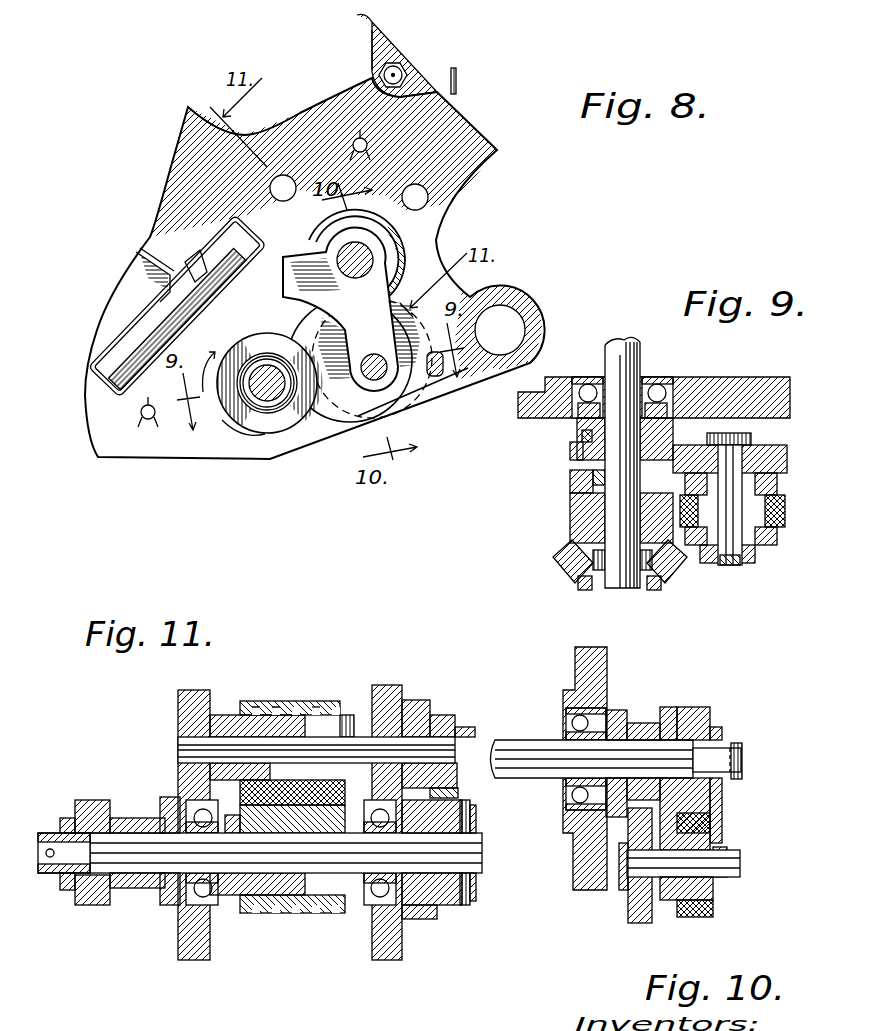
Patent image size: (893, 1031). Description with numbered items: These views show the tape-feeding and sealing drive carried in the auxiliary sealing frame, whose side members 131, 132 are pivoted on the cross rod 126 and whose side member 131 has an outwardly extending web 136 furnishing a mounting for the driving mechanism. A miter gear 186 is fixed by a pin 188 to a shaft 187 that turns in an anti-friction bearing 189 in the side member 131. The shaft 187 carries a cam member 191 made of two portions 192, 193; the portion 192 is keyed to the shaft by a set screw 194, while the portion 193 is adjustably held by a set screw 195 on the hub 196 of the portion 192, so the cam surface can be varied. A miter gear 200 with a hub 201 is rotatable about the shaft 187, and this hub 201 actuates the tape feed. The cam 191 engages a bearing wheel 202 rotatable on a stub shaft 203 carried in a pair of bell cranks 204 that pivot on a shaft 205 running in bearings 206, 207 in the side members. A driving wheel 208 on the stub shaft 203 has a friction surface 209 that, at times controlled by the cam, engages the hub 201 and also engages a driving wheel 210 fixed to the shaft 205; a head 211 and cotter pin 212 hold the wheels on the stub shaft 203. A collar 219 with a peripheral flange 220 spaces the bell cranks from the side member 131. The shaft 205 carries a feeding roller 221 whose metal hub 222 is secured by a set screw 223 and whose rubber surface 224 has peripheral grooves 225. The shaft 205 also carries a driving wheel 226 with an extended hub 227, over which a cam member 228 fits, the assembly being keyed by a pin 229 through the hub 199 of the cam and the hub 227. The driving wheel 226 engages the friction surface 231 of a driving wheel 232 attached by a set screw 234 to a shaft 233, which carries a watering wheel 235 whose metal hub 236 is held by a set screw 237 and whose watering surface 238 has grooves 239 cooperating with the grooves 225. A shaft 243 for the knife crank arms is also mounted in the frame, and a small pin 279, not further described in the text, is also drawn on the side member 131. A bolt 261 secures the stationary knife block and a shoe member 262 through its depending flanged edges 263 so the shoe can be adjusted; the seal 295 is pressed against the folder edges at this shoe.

In FIG. 8, the side member 131 is at (91, 456).
In FIG. 9, the side member 131 is at (718, 392).
In FIG. 11, the side member 131 is at (190, 962).
In FIG. 10, the side member 131 is at (582, 680).
In FIG. 11, the side member 132 is at (390, 962).
In FIG. 8, the cross rod 126 is at (532, 306).
In FIG. 8, the web 136 is at (150, 332).
In FIG. 9, the miter gear 186 is at (598, 590).
In FIG. 8, the shaft 187 is at (268, 398).
In FIG. 9, the shaft 187 is at (622, 588).
In FIG. 9, the pin 188 is at (650, 582).
In FIG. 9, the bearing 189 is at (660, 385).
In FIG. 8, the cam member 191 is at (292, 336).
In FIG. 9, the cam member 191 is at (553, 474).
In FIG. 8, the cam portion 192 is at (240, 354).
In FIG. 9, the cam portion 192 is at (592, 476).
In FIG. 8, the cam portion 193 is at (236, 428).
In FIG. 9, the cam portion 193 is at (570, 446).
In FIG. 9, the set screw 194 is at (580, 488).
In FIG. 9, the set screw 195 is at (580, 436).
In FIG. 9, the hub 196 is at (673, 432).
In FIG. 11, the hub 199 is at (476, 818).
In FIG. 9, the miter gear 200 is at (560, 566).
In FIG. 9, the hub 201 is at (575, 522).
In FIG. 8, the bearing wheel 202 is at (420, 395).
In FIG. 9, the bearing wheel 202 is at (765, 456).
In FIG. 10, the bearing wheel 202 is at (640, 925).
In FIG. 8, the stub shaft 203 is at (440, 374).
In FIG. 9, the stub shaft 203 is at (742, 556).
In FIG. 10, the stub shaft 203 is at (742, 864).
In FIG. 8, the bell crank 204 is at (309, 242).
In FIG. 9, the bell crank 204 is at (777, 486).
In FIG. 11, the bell crank 204 is at (70, 818).
In FIG. 10, the bell crank 204 is at (718, 722).
In FIG. 8, the shaft 205 is at (285, 264).
In FIG. 11, the shaft 205 is at (470, 853).
In FIG. 10, the shaft 205 is at (545, 755).
In FIG. 11, the bearing 206 is at (210, 932).
In FIG. 10, the bearing 206 is at (572, 718).
In FIG. 11, the bearing 207 is at (412, 920).
In FIG. 9, the driving wheel 208 is at (702, 562).
In FIG. 10, the driving wheel 208 is at (716, 893).
In FIG. 9, the friction surface 209 is at (782, 513).
In FIG. 10, the friction surface 209 is at (715, 912).
In FIG. 11, the driving wheel 210 is at (85, 906).
In FIG. 10, the driving wheel 210 is at (722, 790).
In FIG. 9, the head 211 is at (745, 435).
In FIG. 10, the head 211 is at (625, 890).
In FIG. 9, the cotter pin 212 is at (730, 566).
In FIG. 10, the cotter pin 212 is at (728, 850).
In FIG. 8, the collar 219 is at (340, 262).
In FIG. 11, the collar 219 is at (150, 890).
In FIG. 10, the collar 219 is at (645, 723).
In FIG. 11, the peripheral flange 220 is at (166, 800).
In FIG. 10, the peripheral flange 220 is at (620, 710).
In FIG. 11, the feeding roller 221 is at (295, 951).
In FIG. 11, the metal hub 222 is at (340, 912).
In FIG. 11, the set screw 223 is at (345, 833).
In FIG. 11, the surface 224 is at (245, 913).
In FIG. 11, the peripheral grooves 225 is at (318, 914).
In FIG. 11, the driving wheel 226 is at (432, 906).
In FIG. 11, the hub 227 is at (476, 878).
In FIG. 11, the cam member 228 is at (445, 892).
In FIG. 11, the pin 229 is at (470, 816).
In FIG. 11, the friction surface 231 is at (412, 702).
In FIG. 11, the driving wheel 232 is at (442, 715).
In FIG. 8, the shaft 233 is at (270, 186).
In FIG. 11, the shaft 233 is at (180, 746).
In FIG. 11, the set screw 234 is at (464, 727).
In FIG. 11, the watering wheel 235 is at (322, 694).
In FIG. 11, the metal hub 236 is at (226, 715).
In FIG. 11, the set screw 237 is at (350, 715).
In FIG. 11, the watering surface 238 is at (318, 702).
In FIG. 11, the peripheral grooves 239 is at (278, 702).
In FIG. 8, the shaft 243 is at (422, 196).
In FIG. 8, the bolt 261 is at (417, 47).
In FIG. 8, the shoe member 262 is at (390, 32).
In FIG. 8, the depending flanged edges 263 is at (375, 50).
In FIG. 8, the pin 279 is at (353, 139).
In FIG. 8, the seal 295 is at (457, 86).